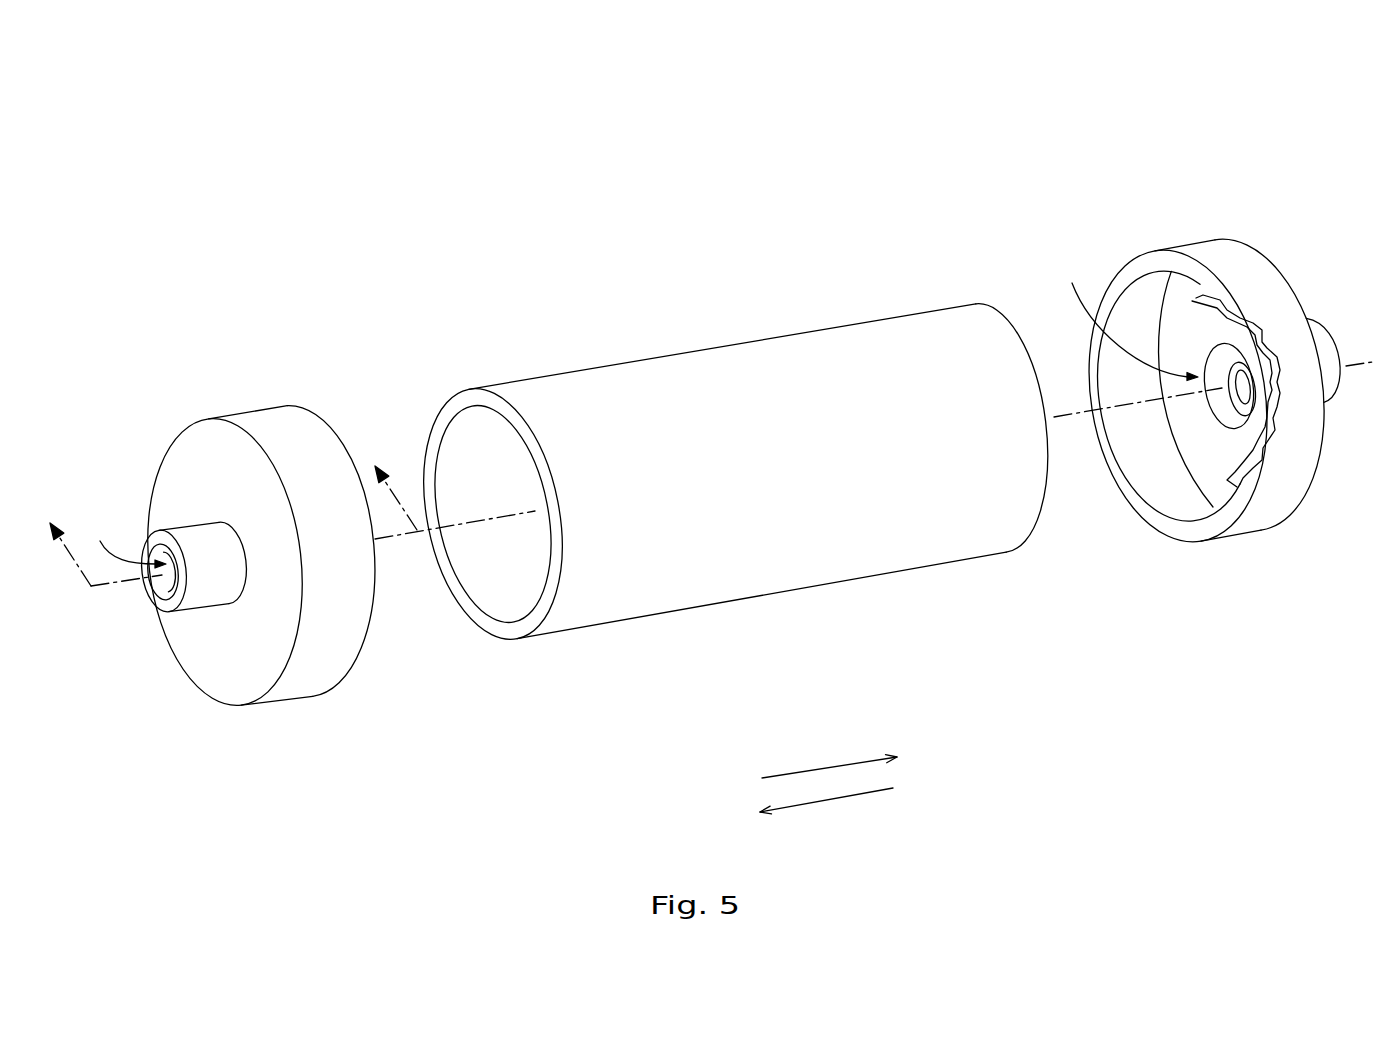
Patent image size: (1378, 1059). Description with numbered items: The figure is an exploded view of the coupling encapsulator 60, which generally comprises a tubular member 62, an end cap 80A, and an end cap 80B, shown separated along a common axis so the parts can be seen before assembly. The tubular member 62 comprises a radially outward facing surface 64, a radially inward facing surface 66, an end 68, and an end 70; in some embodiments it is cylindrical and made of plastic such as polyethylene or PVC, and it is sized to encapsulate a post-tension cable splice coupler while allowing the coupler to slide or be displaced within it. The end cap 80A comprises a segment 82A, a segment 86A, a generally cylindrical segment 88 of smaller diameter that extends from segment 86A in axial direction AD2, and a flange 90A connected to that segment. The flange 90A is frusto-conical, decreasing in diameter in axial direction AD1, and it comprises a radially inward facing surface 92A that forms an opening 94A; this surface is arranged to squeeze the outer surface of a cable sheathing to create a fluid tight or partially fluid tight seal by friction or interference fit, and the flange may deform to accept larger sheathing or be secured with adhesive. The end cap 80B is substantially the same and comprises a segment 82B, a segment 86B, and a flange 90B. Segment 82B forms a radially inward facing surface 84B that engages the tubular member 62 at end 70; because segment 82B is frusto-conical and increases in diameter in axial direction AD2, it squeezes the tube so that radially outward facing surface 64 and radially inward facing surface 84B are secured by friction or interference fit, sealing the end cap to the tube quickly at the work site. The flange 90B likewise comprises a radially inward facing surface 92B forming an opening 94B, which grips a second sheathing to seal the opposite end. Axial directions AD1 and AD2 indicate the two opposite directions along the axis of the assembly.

The coupling encapsulator 60 is at (240, 135).
The tubular member 62 is at (736, 313).
The radially outward facing surface 64 is at (872, 548).
The radially inward facing surface 66 is at (515, 590).
The end 68 is at (442, 415).
The end 70 is at (988, 308).
The end cap 80A is at (202, 316).
The end cap 80B is at (1169, 86).
The segment 82A is at (261, 427).
The segment 82B is at (1210, 263).
The radially inward facing surface 84B is at (1185, 512).
The segment 86A is at (246, 685).
The segment 86B is at (1298, 509).
The segment 88 is at (184, 530).
The flange 90A is at (155, 599).
The radially inward facing surface 92A is at (170, 572).
The flange 90B is at (1233, 385).
The radially inward facing surface 92B is at (1242, 388).
The opening 94A is at (121, 542).
The opening 94B is at (1124, 318).
The axial direction AD1 is at (815, 769).
The axial direction AD2 is at (837, 798).